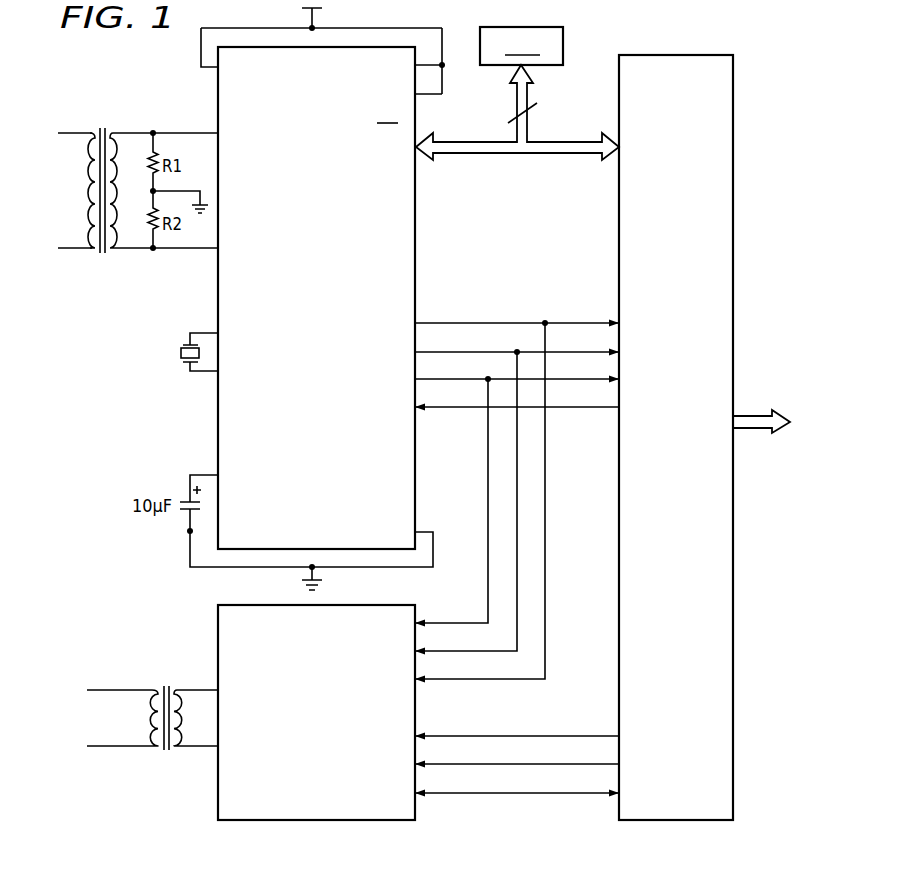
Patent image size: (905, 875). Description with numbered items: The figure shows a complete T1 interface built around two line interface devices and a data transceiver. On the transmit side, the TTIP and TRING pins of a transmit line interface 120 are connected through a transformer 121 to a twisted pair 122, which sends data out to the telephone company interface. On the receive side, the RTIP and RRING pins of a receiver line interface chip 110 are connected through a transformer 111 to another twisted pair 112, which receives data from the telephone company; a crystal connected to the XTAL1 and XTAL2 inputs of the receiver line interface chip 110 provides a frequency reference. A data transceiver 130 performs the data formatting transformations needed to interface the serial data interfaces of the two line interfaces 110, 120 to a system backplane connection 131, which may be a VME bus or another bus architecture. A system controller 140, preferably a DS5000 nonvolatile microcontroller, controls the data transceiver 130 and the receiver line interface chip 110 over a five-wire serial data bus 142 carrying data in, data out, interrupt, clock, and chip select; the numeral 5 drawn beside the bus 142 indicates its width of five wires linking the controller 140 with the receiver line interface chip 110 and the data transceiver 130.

The receiver line interface chip 110 is at (200, 98).
The transformer 111 is at (103, 106).
The twisted pair 112 is at (67, 108).
The transmit line interface 120 is at (200, 629).
The transformer 121 is at (152, 670).
The twisted pair 122 is at (108, 770).
The data transceiver 130 is at (697, 261).
The system backplane connection 131 is at (756, 393).
The system controller 140 is at (521, 46).
The five-wire serial data bus 142 is at (543, 153).
The bus width indicator 5 is at (517, 110).